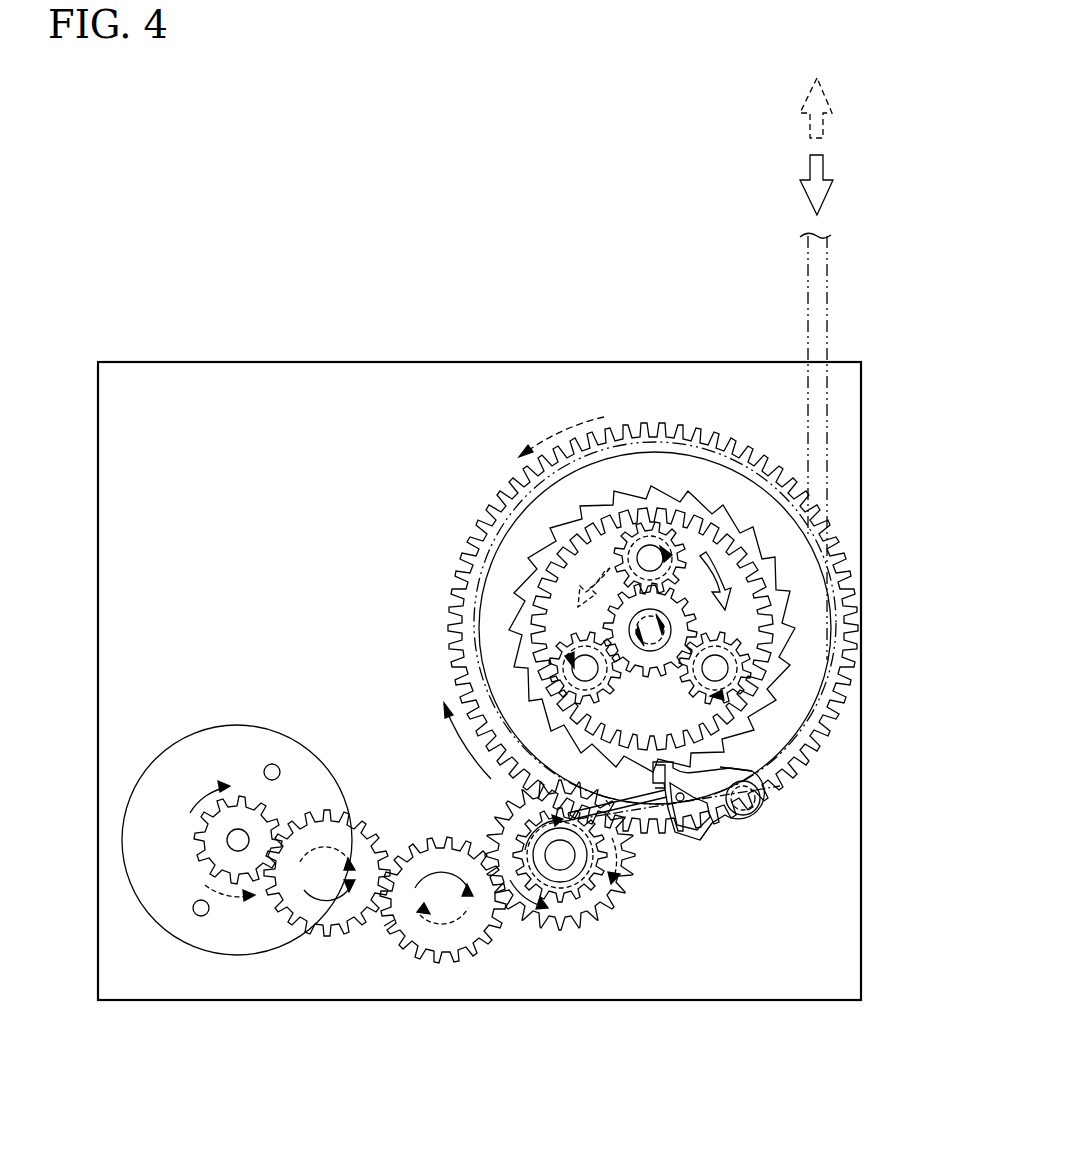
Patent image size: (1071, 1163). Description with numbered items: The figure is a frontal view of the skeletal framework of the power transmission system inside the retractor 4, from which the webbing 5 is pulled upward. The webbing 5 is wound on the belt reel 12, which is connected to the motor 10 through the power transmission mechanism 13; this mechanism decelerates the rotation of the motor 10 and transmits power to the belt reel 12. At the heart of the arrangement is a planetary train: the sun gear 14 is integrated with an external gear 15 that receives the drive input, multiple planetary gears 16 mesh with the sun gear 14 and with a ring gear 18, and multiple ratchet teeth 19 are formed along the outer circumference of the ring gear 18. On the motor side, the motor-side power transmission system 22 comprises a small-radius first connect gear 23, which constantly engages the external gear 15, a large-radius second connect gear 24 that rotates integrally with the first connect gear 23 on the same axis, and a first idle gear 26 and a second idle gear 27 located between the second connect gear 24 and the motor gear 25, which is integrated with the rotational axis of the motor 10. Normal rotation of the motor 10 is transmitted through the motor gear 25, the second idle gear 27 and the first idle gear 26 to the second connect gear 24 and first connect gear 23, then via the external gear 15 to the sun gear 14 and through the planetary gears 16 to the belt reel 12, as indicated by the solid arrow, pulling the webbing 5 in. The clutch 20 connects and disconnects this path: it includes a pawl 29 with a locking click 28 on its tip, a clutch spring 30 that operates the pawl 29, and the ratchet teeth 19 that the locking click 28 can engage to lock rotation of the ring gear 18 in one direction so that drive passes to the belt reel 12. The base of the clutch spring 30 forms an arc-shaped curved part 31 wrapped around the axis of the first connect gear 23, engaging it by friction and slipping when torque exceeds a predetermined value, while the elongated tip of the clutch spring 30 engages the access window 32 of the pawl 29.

The retractor 4 is at (224, 362).
The webbing 5 is at (828, 290).
The motor 10 is at (247, 930).
The belt reel 12 is at (845, 675).
The power transmission mechanism 13 is at (760, 570).
The sun gear 14 is at (604, 621).
The external gear 15 is at (503, 490).
The planetary gears 16 is at (668, 533).
The ring gear 18 is at (782, 607).
The ratchet teeth 19 is at (760, 767).
The clutch 20 is at (723, 833).
The motor-side power transmission system 22 is at (370, 948).
The first connect gear 23 is at (553, 927).
The second connect gear 24 is at (518, 917).
The motor gear 25 is at (258, 815).
The first idle gear 26 is at (448, 963).
The second idle gear 27 is at (325, 917).
The locking click 28 is at (660, 772).
The pawl 29 is at (731, 840).
The clutch spring 30 is at (643, 803).
The curved part 31 is at (572, 882).
The access window 32 is at (703, 840).